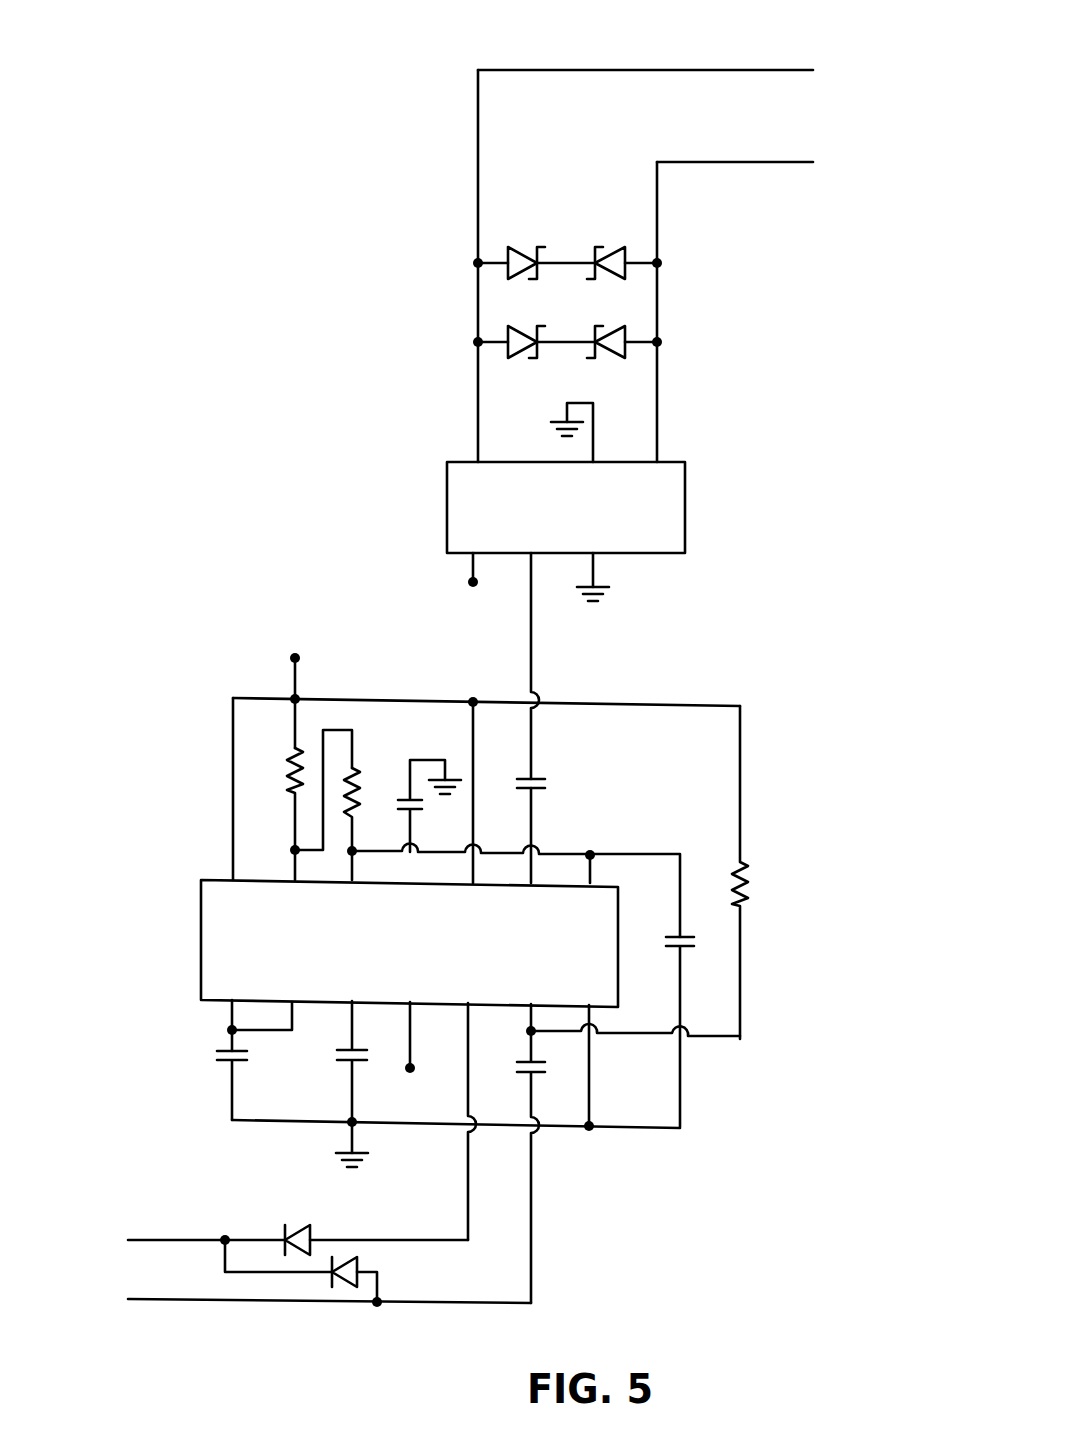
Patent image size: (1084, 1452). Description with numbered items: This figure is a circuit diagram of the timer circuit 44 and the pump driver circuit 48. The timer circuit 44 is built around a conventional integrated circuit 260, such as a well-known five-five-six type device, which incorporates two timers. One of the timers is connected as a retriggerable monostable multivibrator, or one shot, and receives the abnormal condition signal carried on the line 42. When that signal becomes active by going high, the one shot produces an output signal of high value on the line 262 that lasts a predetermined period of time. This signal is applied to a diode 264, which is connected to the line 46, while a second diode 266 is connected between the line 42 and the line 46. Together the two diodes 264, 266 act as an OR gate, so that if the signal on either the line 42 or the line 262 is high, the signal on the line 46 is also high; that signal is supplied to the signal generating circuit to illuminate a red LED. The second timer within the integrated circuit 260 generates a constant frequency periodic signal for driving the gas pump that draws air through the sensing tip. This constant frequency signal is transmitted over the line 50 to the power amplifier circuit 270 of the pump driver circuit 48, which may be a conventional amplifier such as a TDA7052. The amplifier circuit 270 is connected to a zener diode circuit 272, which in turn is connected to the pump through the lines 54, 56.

The line 42 is at (175, 1300).
The timer circuit 44 is at (128, 926).
The line 46 is at (182, 1240).
The pump driver circuit 48 is at (388, 416).
The line 50 is at (534, 660).
The line 54 is at (690, 70).
The line 56 is at (745, 162).
The integrated circuit 260 is at (375, 958).
The line 262 is at (466, 1190).
The diode 264 is at (312, 1236).
The second diode 266 is at (360, 1268).
The power amplifier circuit 270 is at (685, 495).
The zener diode circuit 272 is at (700, 303).